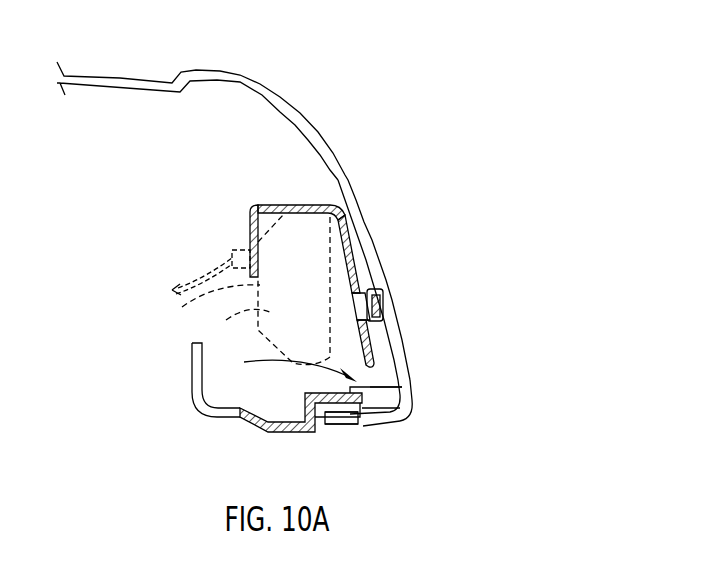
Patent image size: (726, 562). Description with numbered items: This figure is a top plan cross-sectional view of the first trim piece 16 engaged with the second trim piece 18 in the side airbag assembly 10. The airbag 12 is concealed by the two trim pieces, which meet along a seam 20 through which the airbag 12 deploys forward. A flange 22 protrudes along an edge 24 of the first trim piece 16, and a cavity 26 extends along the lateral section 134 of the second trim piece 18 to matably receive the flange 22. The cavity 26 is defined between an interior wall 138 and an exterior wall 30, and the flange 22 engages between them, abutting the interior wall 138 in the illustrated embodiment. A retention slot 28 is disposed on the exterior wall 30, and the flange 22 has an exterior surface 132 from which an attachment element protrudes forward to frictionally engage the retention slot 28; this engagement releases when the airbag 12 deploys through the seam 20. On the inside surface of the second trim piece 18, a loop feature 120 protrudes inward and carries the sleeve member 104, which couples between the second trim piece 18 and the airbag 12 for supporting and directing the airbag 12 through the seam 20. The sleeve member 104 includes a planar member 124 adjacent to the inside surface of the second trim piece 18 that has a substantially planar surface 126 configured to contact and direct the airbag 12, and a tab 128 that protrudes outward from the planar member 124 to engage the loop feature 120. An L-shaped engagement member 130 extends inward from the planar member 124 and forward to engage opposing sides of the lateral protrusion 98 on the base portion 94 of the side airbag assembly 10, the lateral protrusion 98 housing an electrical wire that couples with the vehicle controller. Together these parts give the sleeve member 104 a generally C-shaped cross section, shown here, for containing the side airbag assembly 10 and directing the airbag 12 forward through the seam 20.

The side airbag assembly 10 is at (487, 249).
The airbag 12 is at (212, 294).
The first trim piece 16 is at (213, 415).
The second trim piece 18 is at (408, 418).
The seam 20 is at (318, 432).
The flange 22 is at (364, 427).
The edge 24 is at (308, 432).
The cavity 26 is at (380, 401).
The retention slot 28 is at (337, 413).
The exterior wall 30 is at (343, 424).
The base portion 94 is at (239, 318).
The lateral protrusion 98 is at (237, 250).
The sleeve member 104 is at (293, 204).
The loop feature 120 is at (383, 325).
The planar member 124 is at (356, 258).
The planar surface 126 is at (346, 278).
The tab 128 is at (385, 304).
The L-shaped engagement member 130 is at (249, 236).
The exterior surface 132 is at (350, 418).
The lateral section 134 is at (287, 366).
The interior wall 138 is at (380, 383).